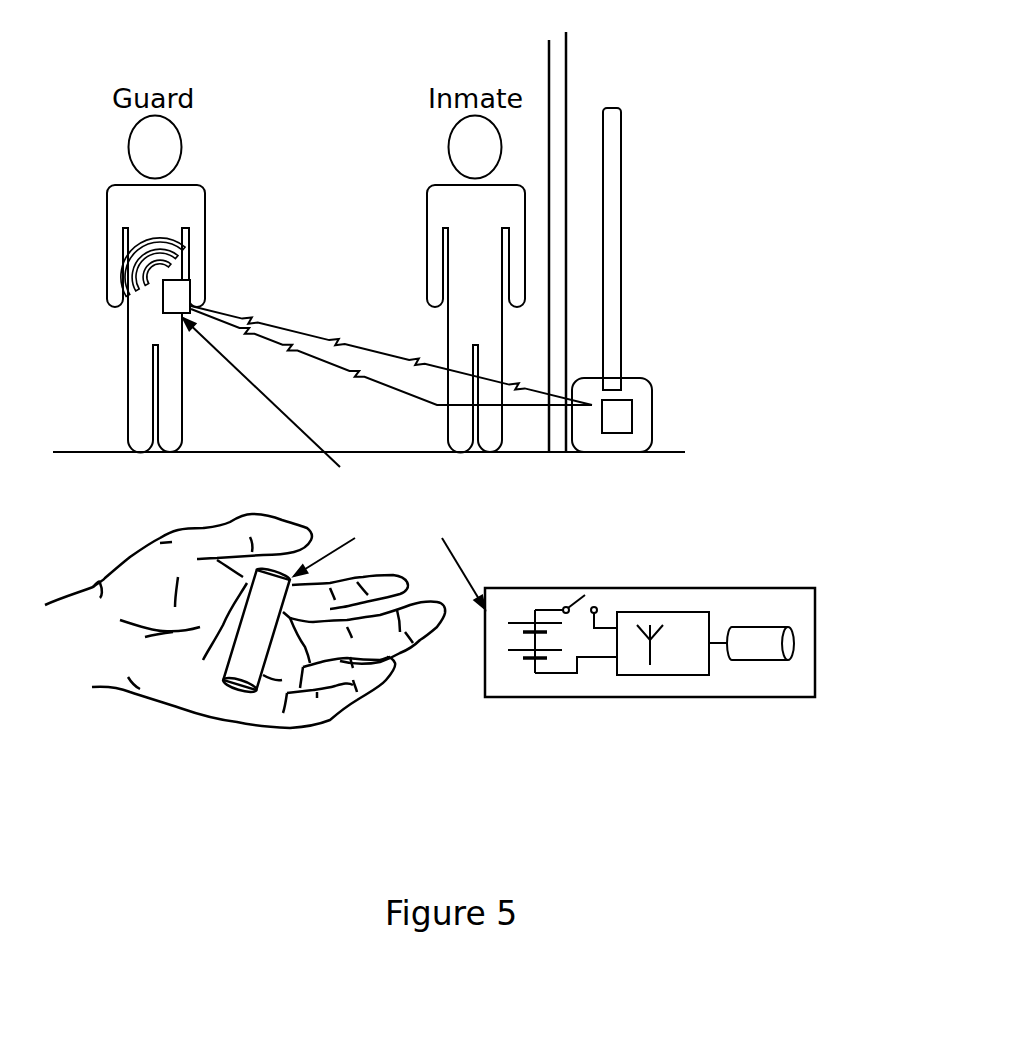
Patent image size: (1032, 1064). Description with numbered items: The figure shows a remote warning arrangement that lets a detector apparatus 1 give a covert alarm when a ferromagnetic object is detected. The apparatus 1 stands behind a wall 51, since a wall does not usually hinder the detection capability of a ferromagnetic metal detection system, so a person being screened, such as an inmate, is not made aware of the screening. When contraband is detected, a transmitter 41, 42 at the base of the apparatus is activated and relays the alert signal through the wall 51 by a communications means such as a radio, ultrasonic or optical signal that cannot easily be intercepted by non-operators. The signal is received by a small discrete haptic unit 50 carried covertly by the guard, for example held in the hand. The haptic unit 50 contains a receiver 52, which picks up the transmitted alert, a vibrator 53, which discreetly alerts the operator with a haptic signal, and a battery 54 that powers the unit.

The apparatus 1 is at (621, 152).
The transmitter 41 is at (705, 422).
The transmitter 42 is at (617, 427).
The haptic unit 50 is at (172, 297).
The wall 51 is at (567, 88).
The receiver 52 is at (693, 668).
The vibrator 53 is at (763, 638).
The battery 54 is at (510, 670).